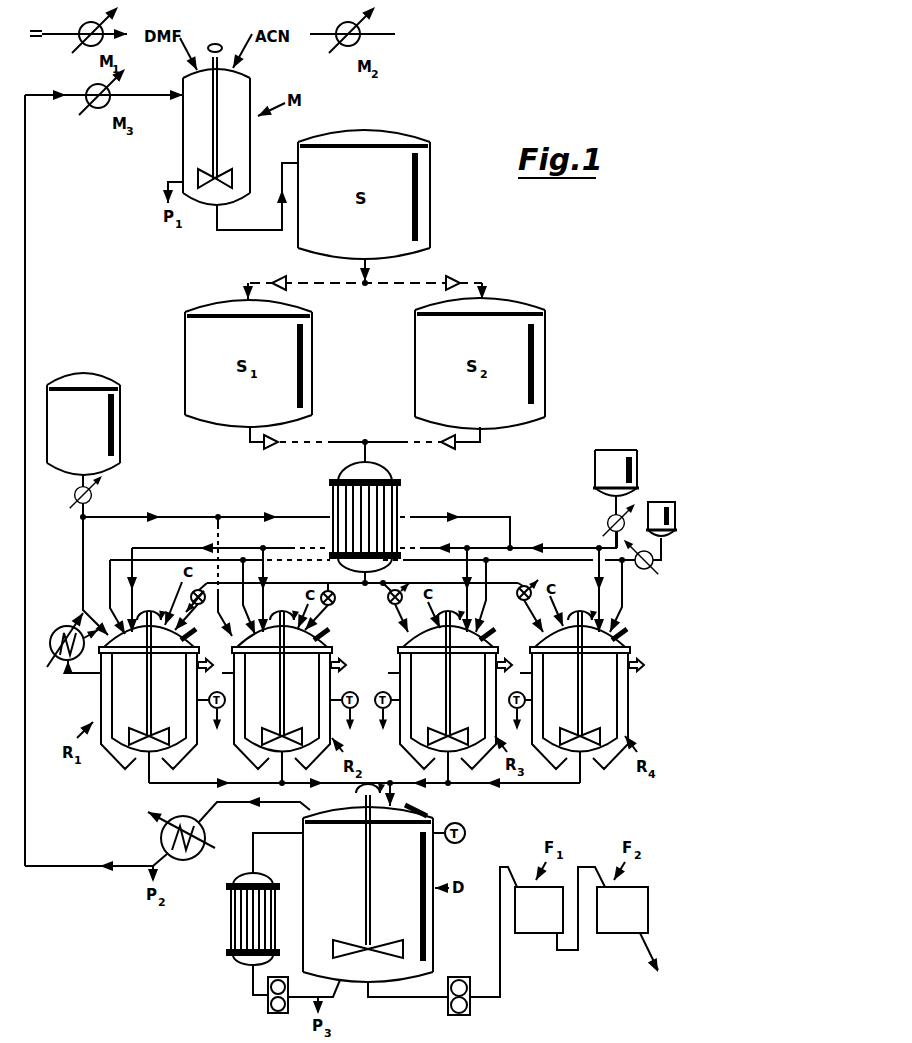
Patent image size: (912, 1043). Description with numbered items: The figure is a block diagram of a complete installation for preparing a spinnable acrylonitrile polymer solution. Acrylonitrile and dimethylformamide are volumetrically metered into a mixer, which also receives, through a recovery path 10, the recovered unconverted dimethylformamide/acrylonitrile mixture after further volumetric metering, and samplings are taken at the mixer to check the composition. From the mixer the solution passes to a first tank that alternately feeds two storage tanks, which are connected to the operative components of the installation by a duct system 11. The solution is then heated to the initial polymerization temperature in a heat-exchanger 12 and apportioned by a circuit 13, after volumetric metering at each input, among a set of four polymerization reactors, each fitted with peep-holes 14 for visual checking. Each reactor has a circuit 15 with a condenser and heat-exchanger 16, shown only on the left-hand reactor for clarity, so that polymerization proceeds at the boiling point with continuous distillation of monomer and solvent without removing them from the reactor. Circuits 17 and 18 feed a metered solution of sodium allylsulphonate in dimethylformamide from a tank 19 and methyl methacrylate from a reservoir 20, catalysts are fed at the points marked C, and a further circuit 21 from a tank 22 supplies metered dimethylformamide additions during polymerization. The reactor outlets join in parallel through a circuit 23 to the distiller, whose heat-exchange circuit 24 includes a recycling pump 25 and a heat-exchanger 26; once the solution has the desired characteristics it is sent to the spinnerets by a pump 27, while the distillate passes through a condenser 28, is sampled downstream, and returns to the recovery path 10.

The recovery path 10 is at (28, 165).
The duct system 11 is at (348, 434).
The heat-exchanger 12 is at (400, 507).
The circuit 13 is at (362, 588).
The peep-holes 14 is at (190, 633).
The circuit 15 is at (84, 675).
The condenser and heat-exchanger 16 is at (58, 627).
The circuit 17 is at (545, 546).
The circuit 18 is at (572, 559).
The tank 19 is at (612, 456).
The reservoir 20 is at (677, 520).
The circuit 21 is at (178, 514).
The tank 22 is at (110, 458).
The circuit 23 is at (472, 786).
The circuit 24 is at (253, 849).
The recycling pump 25 is at (280, 976).
The heat-exchanger 26 is at (230, 904).
The pump 27 is at (456, 976).
The condenser 28 is at (177, 816).